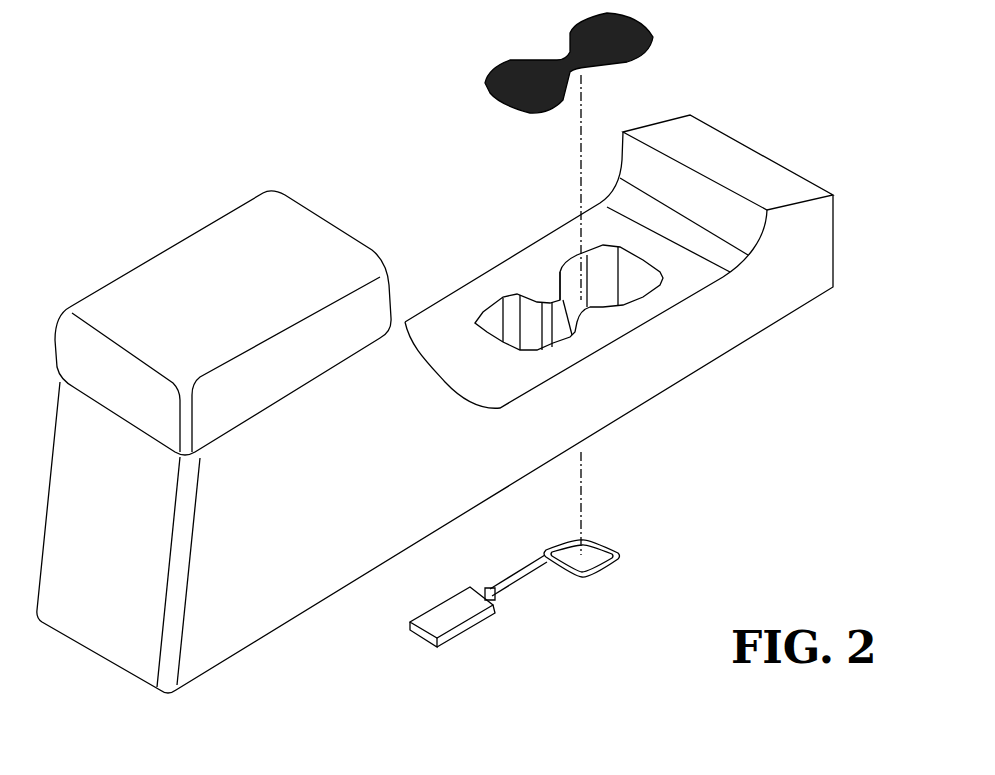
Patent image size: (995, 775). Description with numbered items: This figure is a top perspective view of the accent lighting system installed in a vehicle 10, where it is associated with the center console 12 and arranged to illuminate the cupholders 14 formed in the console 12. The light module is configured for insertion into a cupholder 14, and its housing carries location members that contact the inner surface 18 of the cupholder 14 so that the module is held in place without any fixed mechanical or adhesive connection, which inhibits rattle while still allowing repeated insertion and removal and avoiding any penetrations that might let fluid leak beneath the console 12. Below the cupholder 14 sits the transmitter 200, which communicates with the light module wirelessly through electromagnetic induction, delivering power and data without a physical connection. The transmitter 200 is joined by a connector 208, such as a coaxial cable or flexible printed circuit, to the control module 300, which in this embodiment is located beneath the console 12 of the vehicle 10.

The vehicle 10 is at (148, 181).
The console 12 is at (431, 248).
The cupholder 14 is at (658, 298).
The inner surface 18 is at (572, 268).
The transmitter 200 is at (626, 539).
The connector 208 is at (523, 582).
The control module 300 is at (478, 644).